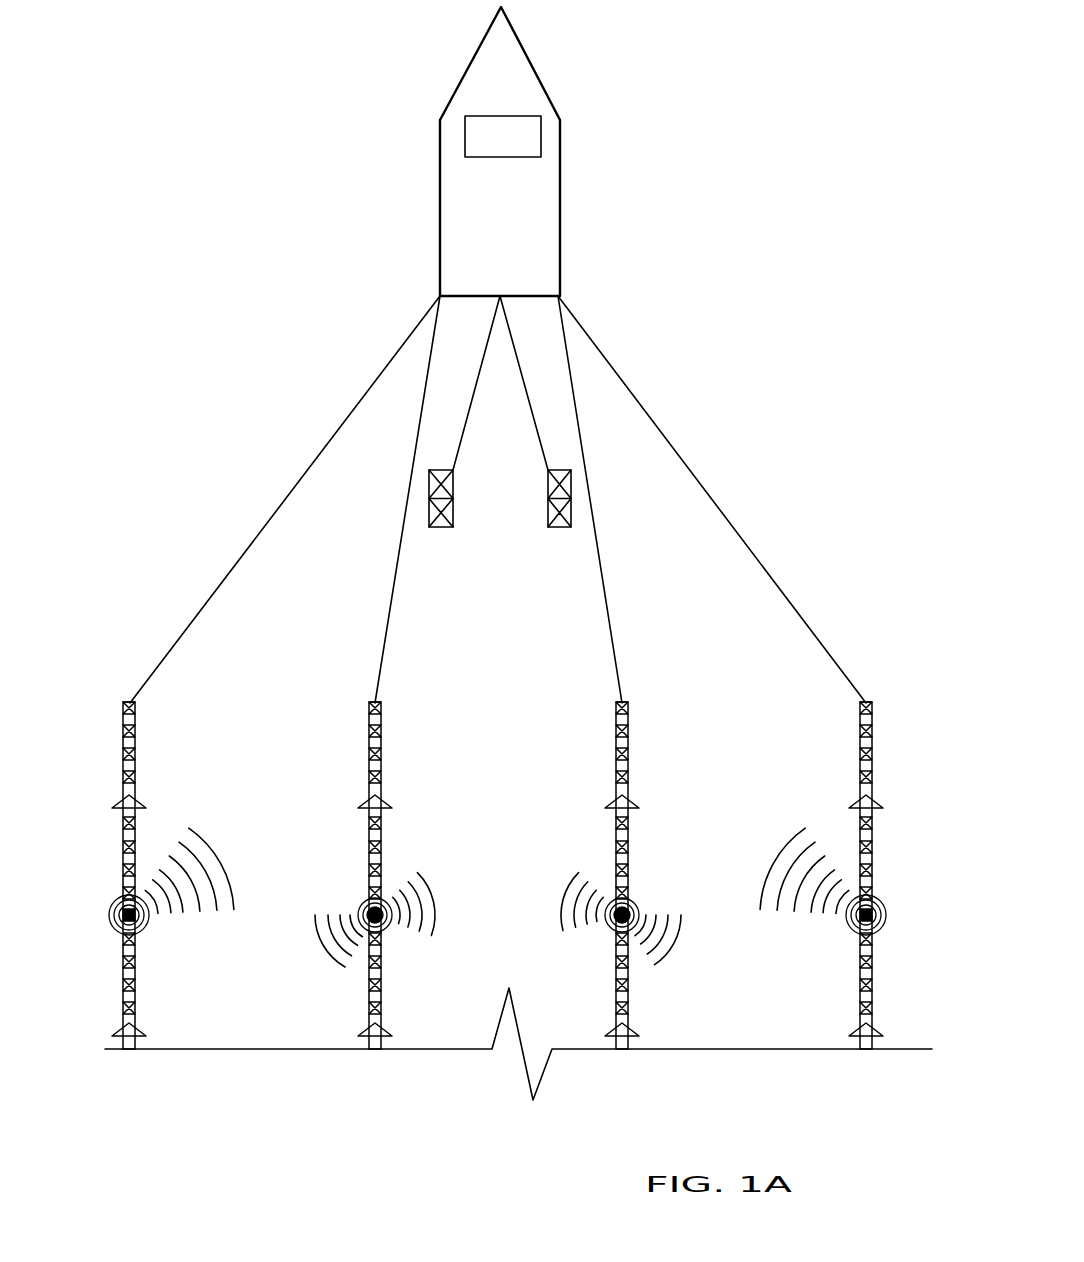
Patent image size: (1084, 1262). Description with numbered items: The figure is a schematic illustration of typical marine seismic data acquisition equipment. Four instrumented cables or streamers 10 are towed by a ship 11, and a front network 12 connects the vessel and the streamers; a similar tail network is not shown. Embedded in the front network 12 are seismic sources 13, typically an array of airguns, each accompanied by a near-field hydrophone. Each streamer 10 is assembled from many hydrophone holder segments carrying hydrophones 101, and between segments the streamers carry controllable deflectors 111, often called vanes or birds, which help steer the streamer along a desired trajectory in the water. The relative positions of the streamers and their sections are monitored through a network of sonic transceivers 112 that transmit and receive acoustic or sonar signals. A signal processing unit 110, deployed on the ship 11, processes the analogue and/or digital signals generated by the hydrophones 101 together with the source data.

The streamer 10 is at (505, 868).
The ship 11 is at (517, 252).
The front network 12 is at (348, 368).
The seismic source 13 is at (455, 500).
The hydrophone 101 is at (136, 730).
The signal processing unit 110 is at (524, 151).
The controllable deflector 111 is at (148, 1030).
The sonic transceiver 112 is at (107, 908).